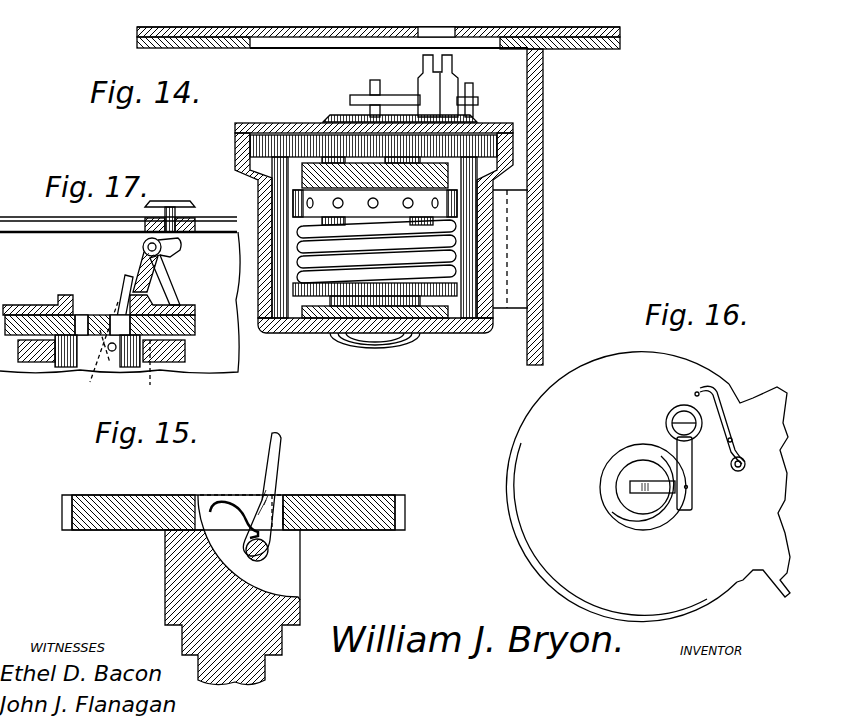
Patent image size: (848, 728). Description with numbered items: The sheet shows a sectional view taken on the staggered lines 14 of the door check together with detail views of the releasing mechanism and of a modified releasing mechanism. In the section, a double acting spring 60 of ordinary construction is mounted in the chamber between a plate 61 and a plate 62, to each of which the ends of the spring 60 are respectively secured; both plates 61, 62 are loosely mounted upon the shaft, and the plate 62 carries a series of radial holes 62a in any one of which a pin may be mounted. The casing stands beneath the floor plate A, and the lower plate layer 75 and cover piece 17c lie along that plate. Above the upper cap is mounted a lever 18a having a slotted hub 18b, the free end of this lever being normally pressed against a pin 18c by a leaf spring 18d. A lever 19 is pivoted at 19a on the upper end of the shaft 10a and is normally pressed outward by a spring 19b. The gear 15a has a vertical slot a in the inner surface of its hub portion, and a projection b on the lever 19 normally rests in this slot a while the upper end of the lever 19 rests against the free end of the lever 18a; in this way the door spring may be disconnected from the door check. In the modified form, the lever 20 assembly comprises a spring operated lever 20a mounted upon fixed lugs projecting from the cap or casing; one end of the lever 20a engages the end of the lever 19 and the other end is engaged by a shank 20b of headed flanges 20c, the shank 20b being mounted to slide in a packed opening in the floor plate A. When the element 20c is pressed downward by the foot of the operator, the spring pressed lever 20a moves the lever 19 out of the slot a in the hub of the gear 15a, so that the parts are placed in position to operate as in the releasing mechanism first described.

In FIG. 14, the floor plate A is at (372, 28).
In FIG. 17, the floor plate A is at (47, 225).
In FIG. 14, the plate layer 75 is at (332, 24).
In FIG. 14, the section line 14 is at (378, 13).
In FIG. 14, the cover piece 17c is at (450, 27).
In FIG. 14, the lever 19 is at (368, 90).
In FIG. 17, the lever 19 is at (125, 290).
In FIG. 15, the lever 19 is at (281, 466).
In FIG. 16, the lever 19 is at (653, 492).
In FIG. 14, the lever 18a is at (405, 95).
In FIG. 16, the lever 18a is at (694, 490).
In FIG. 14, the slotted hub 18b is at (458, 63).
In FIG. 16, the slotted hub 18b is at (680, 416).
In FIG. 14, the pin 18c is at (478, 92).
In FIG. 16, the pin 18c is at (718, 426).
In FIG. 16, the leaf spring 18d is at (718, 420).
In FIG. 14, the plate 62 is at (300, 197).
In FIG. 14, the radial holes 62a is at (300, 208).
In FIG. 14, the double acting spring 60 is at (310, 270).
In FIG. 14, the plate 61 is at (345, 268).
In FIG. 17, the lever 20 is at (28, 305).
In FIG. 17, the spring operated lever 20a is at (162, 272).
In FIG. 17, the shank 20b is at (178, 242).
In FIG. 17, the headed flanges 20c is at (176, 203).
In FIG. 17, the gear 15a is at (190, 335).
In FIG. 15, the gear 15a is at (405, 500).
In FIG. 17, the pivot 19a is at (110, 352).
In FIG. 15, the pivot 19a is at (268, 553).
In FIG. 15, the spring 19b is at (225, 502).
In FIG. 15, the shaft 10a is at (170, 575).
In FIG. 16, the shaft 10a is at (640, 478).
In FIG. 15, the vertical slot a is at (283, 497).
In FIG. 17, the projection b is at (153, 373).
In FIG. 15, the projection b is at (283, 518).